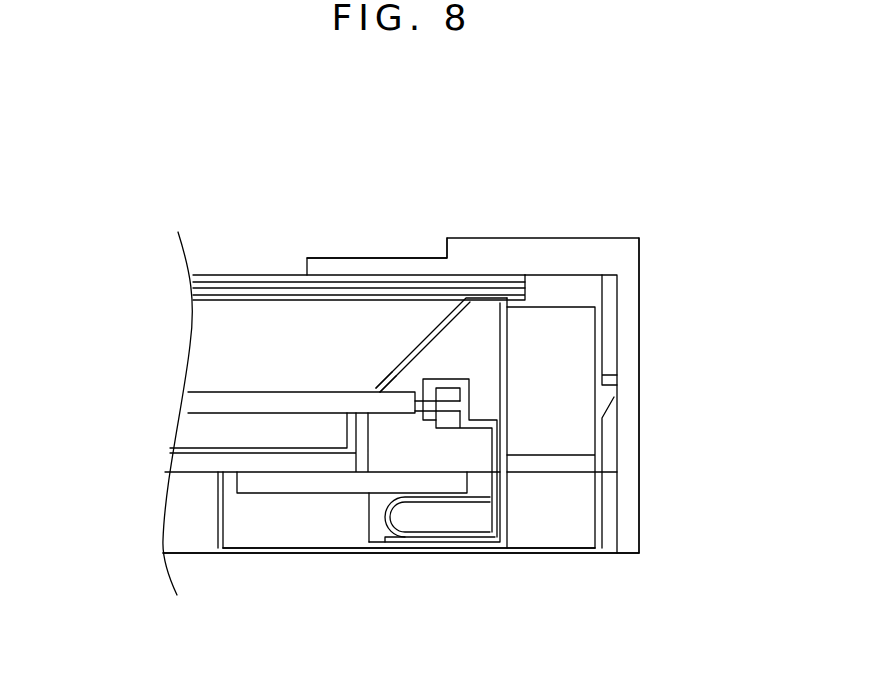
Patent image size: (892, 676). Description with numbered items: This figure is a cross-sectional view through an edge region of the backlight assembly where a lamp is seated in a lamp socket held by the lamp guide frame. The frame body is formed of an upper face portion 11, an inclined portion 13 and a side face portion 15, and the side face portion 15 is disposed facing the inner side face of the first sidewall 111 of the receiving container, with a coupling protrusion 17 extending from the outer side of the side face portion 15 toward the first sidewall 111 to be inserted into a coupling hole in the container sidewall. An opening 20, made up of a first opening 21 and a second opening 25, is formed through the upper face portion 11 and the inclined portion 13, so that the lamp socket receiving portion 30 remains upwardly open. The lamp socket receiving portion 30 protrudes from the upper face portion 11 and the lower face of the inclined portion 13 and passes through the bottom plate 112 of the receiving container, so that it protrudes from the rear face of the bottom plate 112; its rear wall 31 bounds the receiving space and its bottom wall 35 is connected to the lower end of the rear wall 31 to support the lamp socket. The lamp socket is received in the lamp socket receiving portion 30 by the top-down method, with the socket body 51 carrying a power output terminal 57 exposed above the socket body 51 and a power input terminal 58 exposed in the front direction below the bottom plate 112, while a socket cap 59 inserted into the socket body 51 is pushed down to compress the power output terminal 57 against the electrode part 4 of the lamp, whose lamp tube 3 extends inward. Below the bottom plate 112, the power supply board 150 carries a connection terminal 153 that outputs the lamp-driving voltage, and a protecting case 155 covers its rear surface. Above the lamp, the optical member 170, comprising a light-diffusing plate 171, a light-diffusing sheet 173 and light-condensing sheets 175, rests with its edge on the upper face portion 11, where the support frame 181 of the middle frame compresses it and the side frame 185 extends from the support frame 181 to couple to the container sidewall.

The lamp tube 3 is at (190, 404).
The electrode part 4 is at (458, 405).
The upper face portion 11 is at (515, 297).
The inclined portion 13 is at (438, 315).
The side face portion 15 is at (600, 316).
The coupling protrusion 17 is at (612, 395).
The opening 20 is at (362, 268).
The first opening 21 is at (377, 390).
The second opening 25 is at (383, 383).
The lamp socket receiving portion 30 is at (460, 477).
The rear wall 31 is at (508, 503).
The bottom wall 35 is at (465, 545).
The socket body 51 is at (418, 538).
The power output terminal 57 is at (452, 397).
The power input terminal 58 is at (382, 530).
The socket cap 59 is at (455, 380).
The first sidewall 111 is at (610, 342).
The bottom plate 112 is at (198, 463).
The power supply board 150 is at (257, 488).
The connection terminal 153 is at (425, 492).
The protecting case 155 is at (298, 553).
The optical member 170 is at (280, 288).
The light-diffusing plate 171 is at (193, 297).
The light-diffusing sheet 173 is at (193, 288).
The light-condensing sheets 175 is at (193, 277).
The support frame 181 is at (422, 258).
The side frame 185 is at (633, 508).